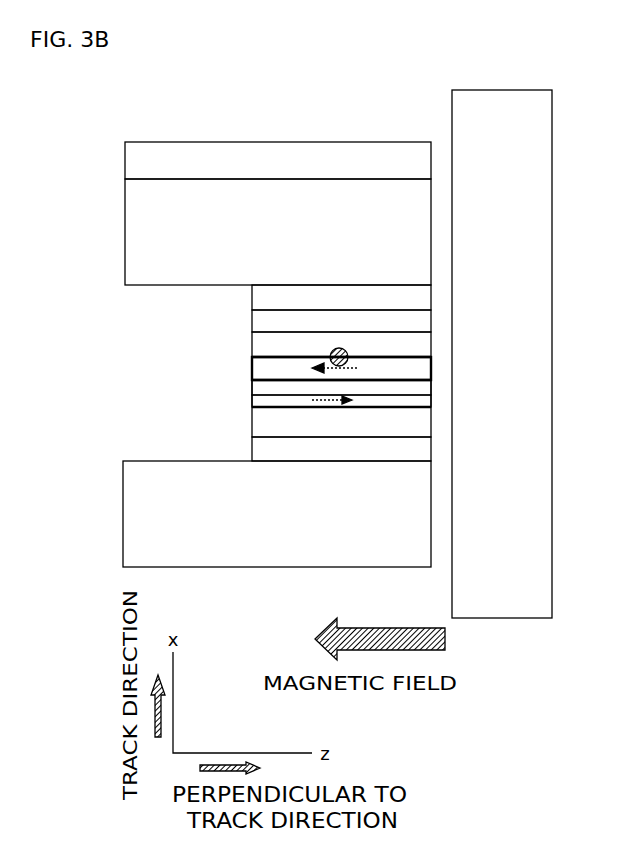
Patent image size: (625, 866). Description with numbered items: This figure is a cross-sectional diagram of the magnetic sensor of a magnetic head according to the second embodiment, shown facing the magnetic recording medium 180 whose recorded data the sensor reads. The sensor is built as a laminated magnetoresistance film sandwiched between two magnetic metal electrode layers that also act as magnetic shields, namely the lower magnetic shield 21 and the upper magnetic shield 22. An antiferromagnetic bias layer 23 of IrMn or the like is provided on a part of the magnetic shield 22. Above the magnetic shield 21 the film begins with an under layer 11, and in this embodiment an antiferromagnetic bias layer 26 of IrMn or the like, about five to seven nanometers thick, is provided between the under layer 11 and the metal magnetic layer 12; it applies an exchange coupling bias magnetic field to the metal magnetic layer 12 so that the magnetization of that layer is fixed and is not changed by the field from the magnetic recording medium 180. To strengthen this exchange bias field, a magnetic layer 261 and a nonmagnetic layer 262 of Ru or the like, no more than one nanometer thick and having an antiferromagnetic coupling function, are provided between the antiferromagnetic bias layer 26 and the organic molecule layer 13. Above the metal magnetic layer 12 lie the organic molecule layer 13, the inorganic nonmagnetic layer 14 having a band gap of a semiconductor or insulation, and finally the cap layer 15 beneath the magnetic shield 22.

The antiferromagnetic bias layer 23 is at (136, 158).
The magnetic shield 22 is at (136, 230).
The cap layer 15 is at (252, 297).
The inorganic nonmagnetic layer 14 is at (252, 320).
The organic molecule layer 13 is at (252, 343).
The metal magnetic layer 12 is at (252, 367).
The nonmagnetic layer 262 is at (252, 387).
The magnetic layer 261 is at (252, 401).
The antiferromagnetic bias layer 26 is at (252, 424).
The under layer 11 is at (252, 450).
The magnetic shield 21 is at (134, 510).
The magnetic recording medium 180 is at (498, 597).